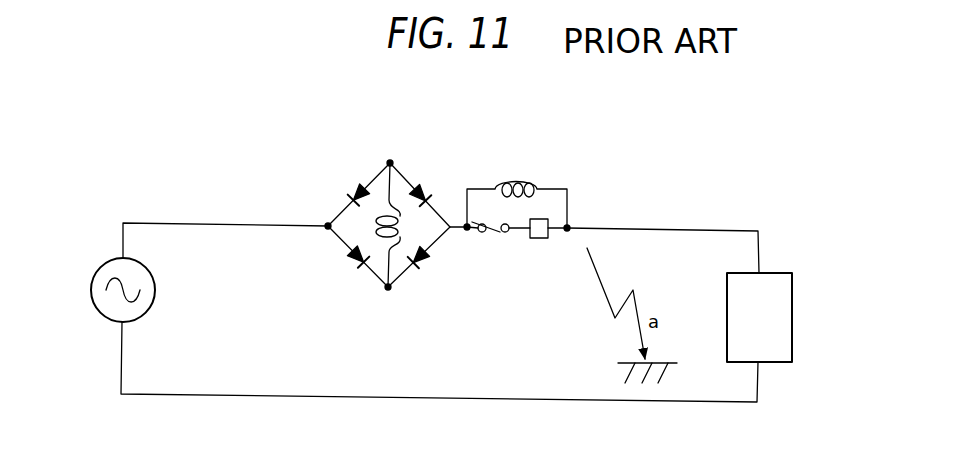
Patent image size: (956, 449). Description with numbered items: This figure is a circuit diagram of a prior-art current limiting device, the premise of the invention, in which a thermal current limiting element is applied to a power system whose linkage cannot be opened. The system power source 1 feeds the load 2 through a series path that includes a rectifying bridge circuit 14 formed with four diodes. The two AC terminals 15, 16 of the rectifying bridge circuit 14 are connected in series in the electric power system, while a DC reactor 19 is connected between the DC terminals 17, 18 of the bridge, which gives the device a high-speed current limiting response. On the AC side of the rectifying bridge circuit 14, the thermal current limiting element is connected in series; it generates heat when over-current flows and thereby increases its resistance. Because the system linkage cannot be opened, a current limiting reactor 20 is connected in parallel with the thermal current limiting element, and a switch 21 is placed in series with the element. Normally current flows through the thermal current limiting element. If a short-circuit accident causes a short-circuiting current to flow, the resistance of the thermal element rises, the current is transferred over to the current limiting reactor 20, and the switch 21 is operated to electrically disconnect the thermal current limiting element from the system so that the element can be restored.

The system power source 1 is at (96, 270).
The load 2 is at (794, 315).
The rectifying bridge circuit 14 is at (407, 155).
The AC terminal 15 is at (323, 232).
The AC terminal 16 is at (461, 234).
The DC terminal 17 is at (386, 157).
The DC terminal 18 is at (386, 294).
The DC reactor 19 is at (365, 238).
The current limiting reactor 20 is at (543, 176).
The switch 21 is at (496, 237).